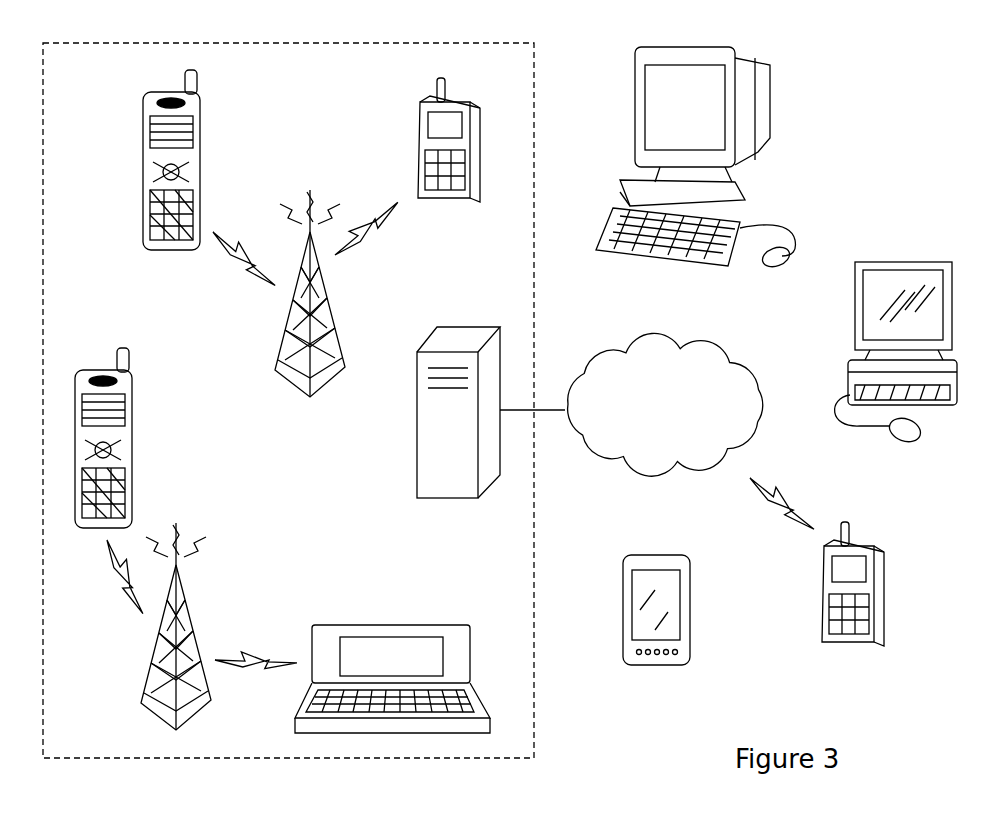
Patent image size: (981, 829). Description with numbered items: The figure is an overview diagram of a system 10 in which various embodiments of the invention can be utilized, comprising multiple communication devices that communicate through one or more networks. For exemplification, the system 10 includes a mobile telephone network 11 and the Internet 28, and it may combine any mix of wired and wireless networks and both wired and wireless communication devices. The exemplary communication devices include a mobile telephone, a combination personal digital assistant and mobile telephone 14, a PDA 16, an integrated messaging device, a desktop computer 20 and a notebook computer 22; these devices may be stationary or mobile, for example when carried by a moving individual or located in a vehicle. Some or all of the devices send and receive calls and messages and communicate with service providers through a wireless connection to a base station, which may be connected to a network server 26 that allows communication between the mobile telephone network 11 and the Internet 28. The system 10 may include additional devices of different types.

The system 10 is at (943, 506).
The mobile telephone network 11 is at (80, 79).
The combination personal digital assistant and mobile telephone 14 is at (390, 628).
The PDA 16 is at (690, 607).
The desktop computer 20 is at (770, 95).
The notebook computer 22 is at (905, 260).
The network server 26 is at (417, 426).
The Internet 28 is at (700, 354).